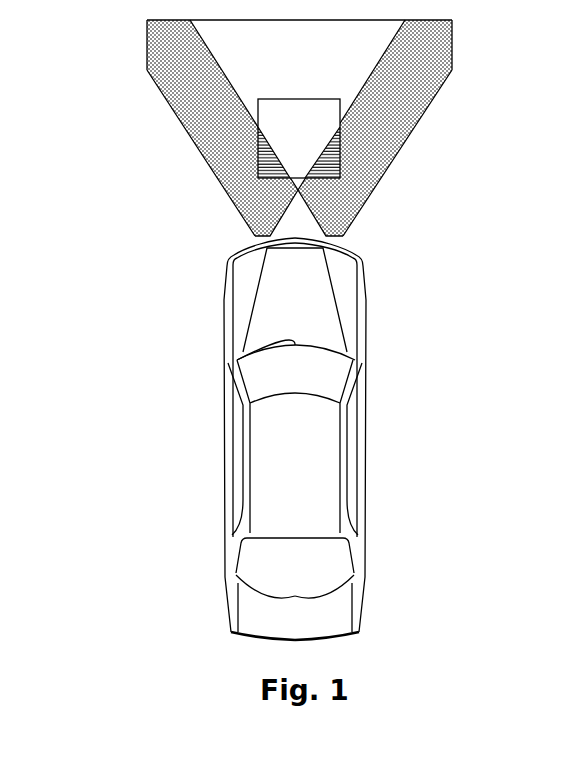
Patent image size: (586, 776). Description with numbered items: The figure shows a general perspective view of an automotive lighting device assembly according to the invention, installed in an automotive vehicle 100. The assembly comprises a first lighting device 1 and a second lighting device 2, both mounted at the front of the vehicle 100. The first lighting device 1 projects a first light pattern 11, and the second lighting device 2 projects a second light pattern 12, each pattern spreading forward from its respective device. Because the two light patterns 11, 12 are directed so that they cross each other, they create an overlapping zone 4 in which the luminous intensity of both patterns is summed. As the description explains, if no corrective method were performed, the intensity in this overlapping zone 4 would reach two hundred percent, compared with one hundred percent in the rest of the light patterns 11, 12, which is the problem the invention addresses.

The first lighting device 1 is at (245, 250).
The second lighting device 2 is at (340, 247).
The overlapping zone 4 is at (240, 33).
The first light pattern 11 is at (197, 105).
The second light pattern 12 is at (388, 110).
The automotive vehicle 100 is at (308, 455).